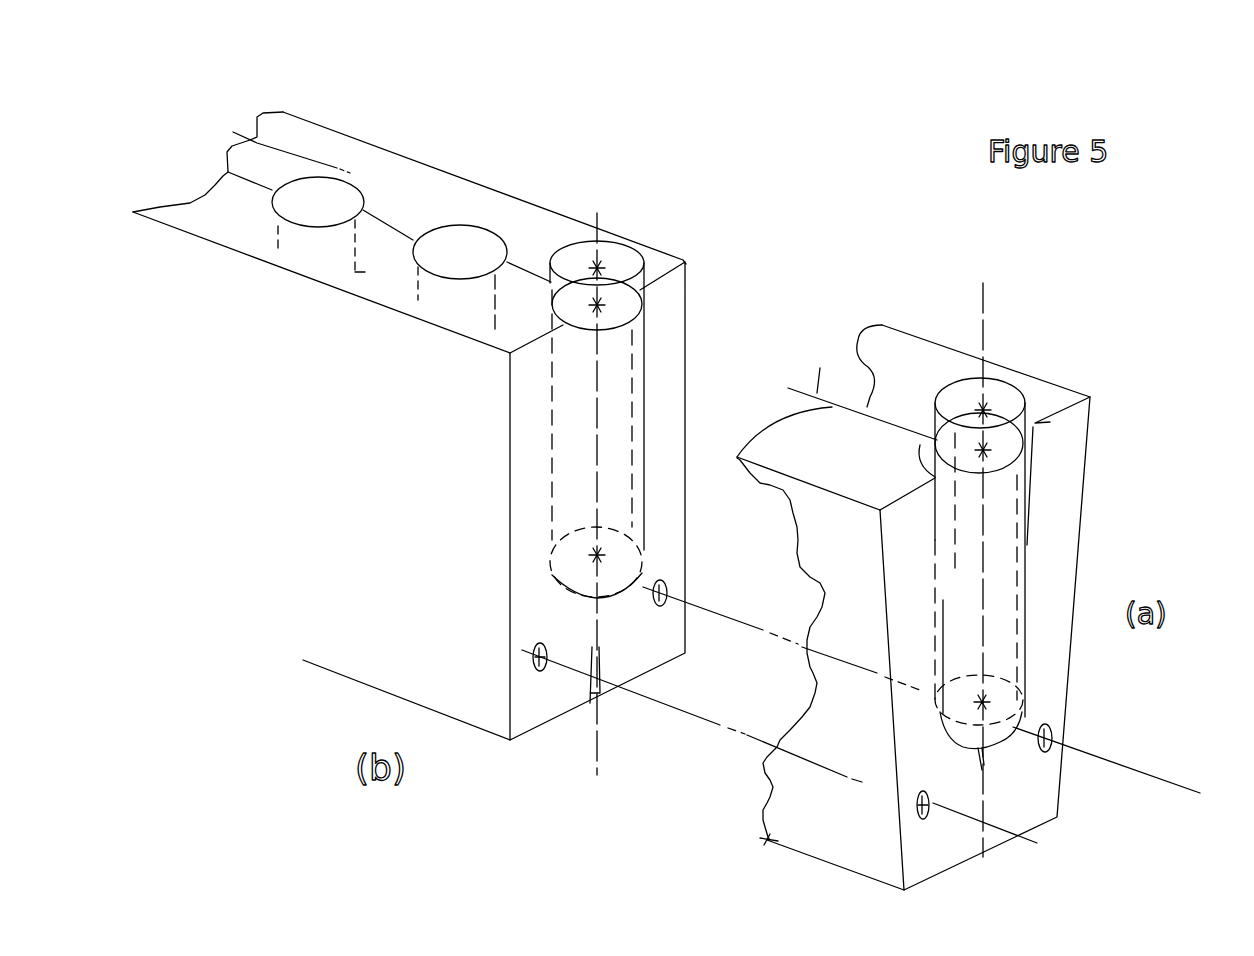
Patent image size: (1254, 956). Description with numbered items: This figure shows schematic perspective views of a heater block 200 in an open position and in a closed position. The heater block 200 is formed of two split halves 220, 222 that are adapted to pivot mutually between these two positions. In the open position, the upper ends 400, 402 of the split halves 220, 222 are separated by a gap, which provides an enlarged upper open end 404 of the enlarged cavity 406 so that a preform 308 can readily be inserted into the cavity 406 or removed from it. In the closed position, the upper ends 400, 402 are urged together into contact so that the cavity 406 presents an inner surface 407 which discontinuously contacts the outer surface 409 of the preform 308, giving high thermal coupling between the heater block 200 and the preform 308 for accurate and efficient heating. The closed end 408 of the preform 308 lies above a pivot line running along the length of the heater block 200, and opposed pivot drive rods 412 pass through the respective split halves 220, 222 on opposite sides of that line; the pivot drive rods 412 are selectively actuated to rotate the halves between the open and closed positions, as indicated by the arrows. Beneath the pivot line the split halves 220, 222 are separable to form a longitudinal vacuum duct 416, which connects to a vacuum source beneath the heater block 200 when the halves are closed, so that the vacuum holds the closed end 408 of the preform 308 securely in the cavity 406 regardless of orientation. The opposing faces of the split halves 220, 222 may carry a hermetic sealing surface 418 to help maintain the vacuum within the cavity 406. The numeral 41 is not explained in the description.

The rivet 41 is at (583, 623).
The heater block 200 is at (1097, 487).
The split half 220 is at (845, 482).
The split half 222 is at (1058, 390).
The preform 308 is at (1007, 388).
The upper end 400 is at (212, 197).
The upper end 402 is at (260, 121).
The enlarged upper open end 404 is at (867, 407).
The enlarged cavity 406 is at (1032, 428).
The inner surface 407 is at (643, 482).
The closed end 408 is at (755, 380).
The outer surface 409 is at (637, 447).
The pivot drive rod 412 is at (665, 600).
The longitudinal vacuum duct 416 is at (570, 733).
The hermetic sealing surface 418 is at (908, 426).